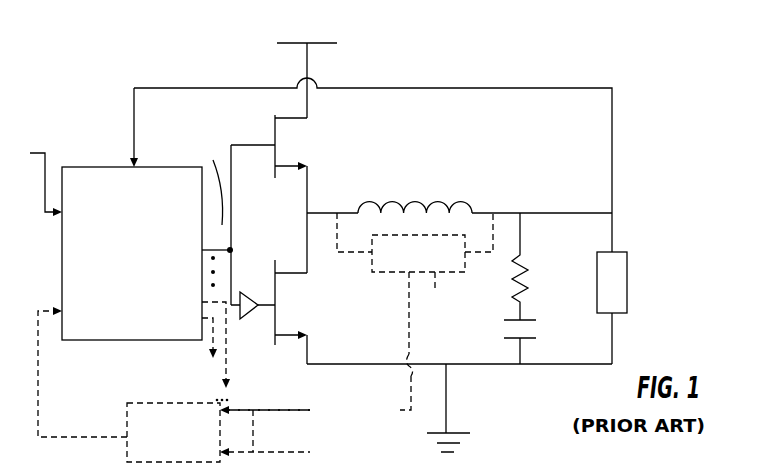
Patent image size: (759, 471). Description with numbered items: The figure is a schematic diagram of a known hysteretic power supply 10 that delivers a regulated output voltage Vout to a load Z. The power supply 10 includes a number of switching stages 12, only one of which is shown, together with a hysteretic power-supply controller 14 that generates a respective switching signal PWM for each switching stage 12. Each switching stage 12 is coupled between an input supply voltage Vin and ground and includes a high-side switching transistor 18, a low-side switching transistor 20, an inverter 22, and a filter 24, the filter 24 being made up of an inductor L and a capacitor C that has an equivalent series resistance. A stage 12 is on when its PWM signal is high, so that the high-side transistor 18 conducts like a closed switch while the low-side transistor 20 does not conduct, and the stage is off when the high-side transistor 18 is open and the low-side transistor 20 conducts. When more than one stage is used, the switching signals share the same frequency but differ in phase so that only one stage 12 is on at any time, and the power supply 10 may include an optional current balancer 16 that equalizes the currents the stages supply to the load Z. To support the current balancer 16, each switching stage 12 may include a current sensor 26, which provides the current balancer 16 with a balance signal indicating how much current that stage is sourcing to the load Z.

The hysteretic power supply 10 is at (656, 133).
The switching stage 12 is at (512, 384).
The hysteretic power-supply controller 14 is at (82, 167).
The current balancer 16 is at (127, 403).
The high-side switching transistor 18 is at (272, 135).
The low-side switching transistor 20 is at (273, 262).
The inverter 22 is at (240, 302).
The filter 24 is at (512, 157).
The current sensor 26 is at (432, 296).